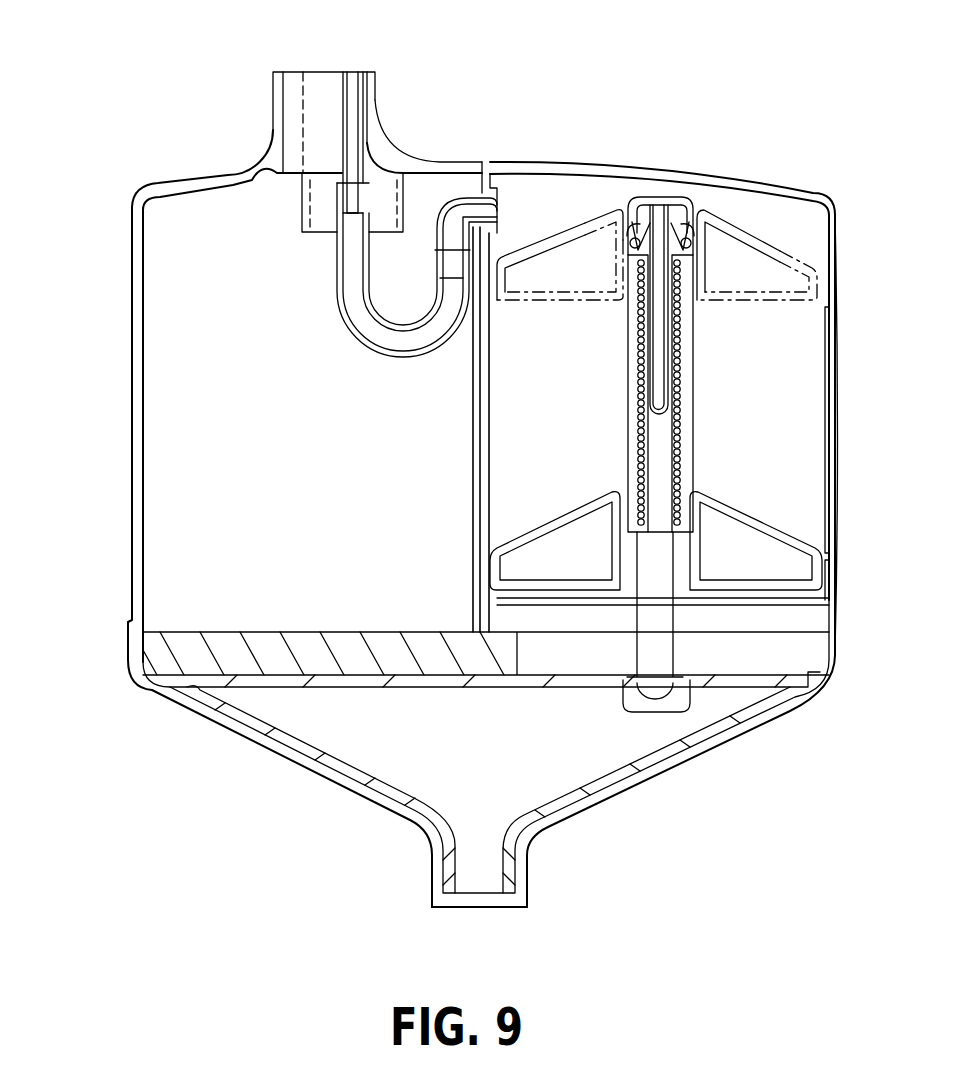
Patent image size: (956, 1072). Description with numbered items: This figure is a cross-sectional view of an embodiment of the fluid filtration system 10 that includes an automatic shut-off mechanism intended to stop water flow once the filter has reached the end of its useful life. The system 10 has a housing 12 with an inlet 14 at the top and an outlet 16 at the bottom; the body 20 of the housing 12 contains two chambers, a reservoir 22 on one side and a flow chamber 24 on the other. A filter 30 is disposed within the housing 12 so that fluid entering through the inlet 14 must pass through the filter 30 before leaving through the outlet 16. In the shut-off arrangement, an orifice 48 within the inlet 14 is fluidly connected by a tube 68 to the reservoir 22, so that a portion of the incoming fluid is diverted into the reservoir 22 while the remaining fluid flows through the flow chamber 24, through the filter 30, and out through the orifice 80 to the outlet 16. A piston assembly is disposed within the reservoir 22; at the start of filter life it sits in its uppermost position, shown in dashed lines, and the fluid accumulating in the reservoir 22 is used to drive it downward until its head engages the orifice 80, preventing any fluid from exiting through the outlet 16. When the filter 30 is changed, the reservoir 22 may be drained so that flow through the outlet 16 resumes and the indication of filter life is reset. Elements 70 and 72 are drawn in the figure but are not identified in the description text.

The fluid filtration system 10 is at (98, 395).
The housing 12 is at (658, 170).
The inlet 14 is at (320, 70).
The outlet 16 is at (480, 908).
The body 20 is at (135, 550).
The reservoir 22 is at (803, 413).
The flow chamber 24 is at (163, 320).
The filter 30 is at (315, 640).
The orifice 48 is at (355, 80).
The tube 68 is at (387, 327).
The valve assembly 70 is at (672, 220).
The valve stem 72 is at (662, 670).
The orifice 80 is at (655, 705).